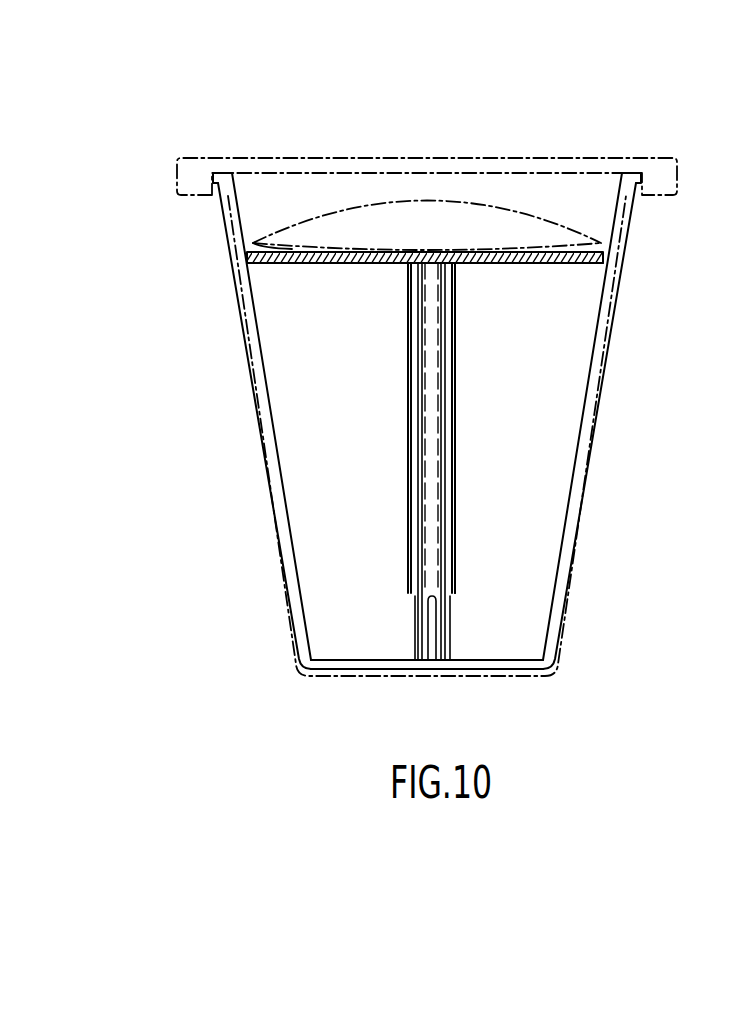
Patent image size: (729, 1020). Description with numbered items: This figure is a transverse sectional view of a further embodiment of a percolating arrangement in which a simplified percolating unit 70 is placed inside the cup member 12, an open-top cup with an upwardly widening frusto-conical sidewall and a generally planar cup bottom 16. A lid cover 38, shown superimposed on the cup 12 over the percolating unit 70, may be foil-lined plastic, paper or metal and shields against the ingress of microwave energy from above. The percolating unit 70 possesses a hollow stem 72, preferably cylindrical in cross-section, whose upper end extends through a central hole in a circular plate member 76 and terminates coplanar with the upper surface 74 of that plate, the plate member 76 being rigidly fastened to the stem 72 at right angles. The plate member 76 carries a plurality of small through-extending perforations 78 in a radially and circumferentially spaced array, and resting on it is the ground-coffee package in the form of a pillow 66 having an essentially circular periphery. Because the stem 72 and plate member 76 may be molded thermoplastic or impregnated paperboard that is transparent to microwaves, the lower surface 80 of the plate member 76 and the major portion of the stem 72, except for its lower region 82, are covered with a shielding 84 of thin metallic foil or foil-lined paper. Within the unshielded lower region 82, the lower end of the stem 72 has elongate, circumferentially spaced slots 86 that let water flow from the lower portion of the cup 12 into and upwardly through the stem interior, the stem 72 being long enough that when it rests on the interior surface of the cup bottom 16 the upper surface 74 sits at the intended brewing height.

The cup member 12 is at (572, 589).
The cup bottom 16 is at (507, 673).
The lid cover 38 is at (296, 157).
The pillow 66 is at (505, 210).
The percolating unit 70 is at (410, 404).
The hollow stem 72 is at (453, 463).
The upper surface 74 is at (268, 248).
The circular plate member 76 is at (600, 250).
The perforations 78 is at (535, 265).
The lower surface 80 is at (465, 265).
The lower region 82 is at (463, 593).
The shielding 84 is at (290, 263).
The slots 86 is at (428, 660).